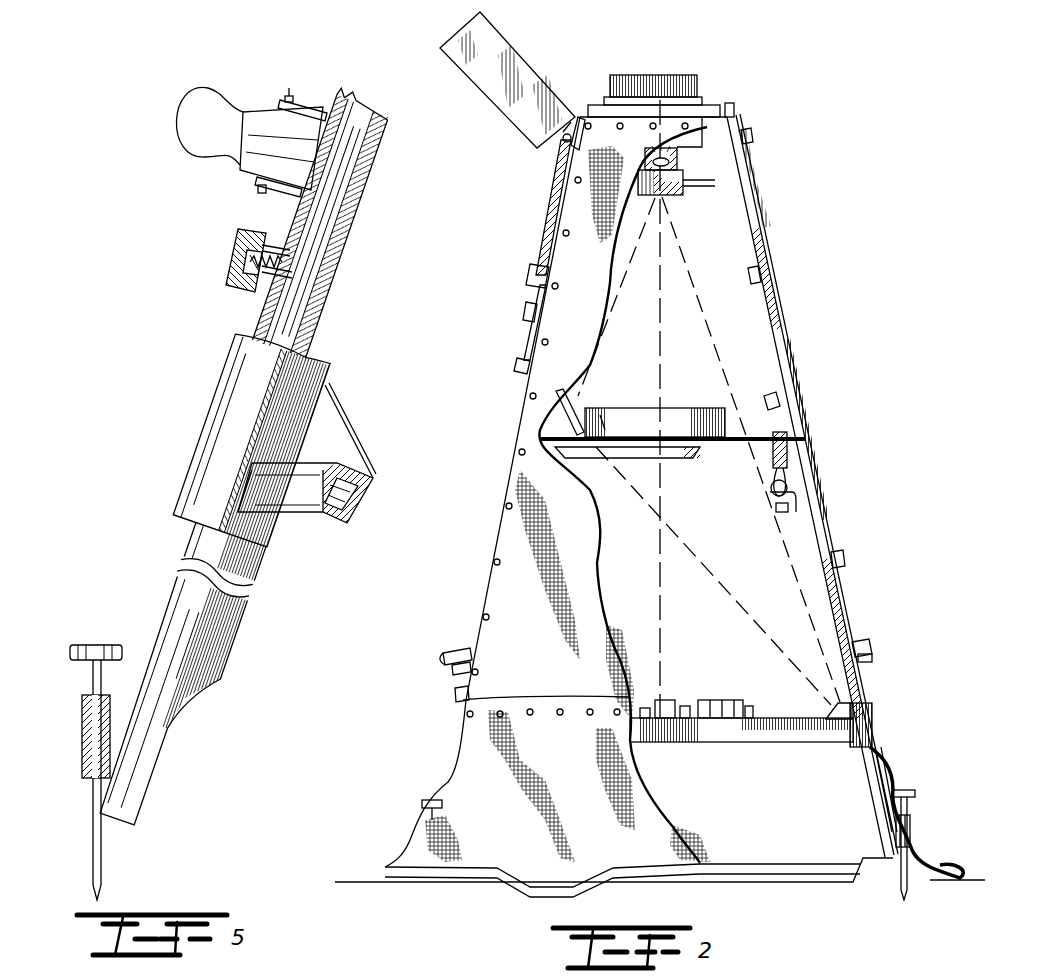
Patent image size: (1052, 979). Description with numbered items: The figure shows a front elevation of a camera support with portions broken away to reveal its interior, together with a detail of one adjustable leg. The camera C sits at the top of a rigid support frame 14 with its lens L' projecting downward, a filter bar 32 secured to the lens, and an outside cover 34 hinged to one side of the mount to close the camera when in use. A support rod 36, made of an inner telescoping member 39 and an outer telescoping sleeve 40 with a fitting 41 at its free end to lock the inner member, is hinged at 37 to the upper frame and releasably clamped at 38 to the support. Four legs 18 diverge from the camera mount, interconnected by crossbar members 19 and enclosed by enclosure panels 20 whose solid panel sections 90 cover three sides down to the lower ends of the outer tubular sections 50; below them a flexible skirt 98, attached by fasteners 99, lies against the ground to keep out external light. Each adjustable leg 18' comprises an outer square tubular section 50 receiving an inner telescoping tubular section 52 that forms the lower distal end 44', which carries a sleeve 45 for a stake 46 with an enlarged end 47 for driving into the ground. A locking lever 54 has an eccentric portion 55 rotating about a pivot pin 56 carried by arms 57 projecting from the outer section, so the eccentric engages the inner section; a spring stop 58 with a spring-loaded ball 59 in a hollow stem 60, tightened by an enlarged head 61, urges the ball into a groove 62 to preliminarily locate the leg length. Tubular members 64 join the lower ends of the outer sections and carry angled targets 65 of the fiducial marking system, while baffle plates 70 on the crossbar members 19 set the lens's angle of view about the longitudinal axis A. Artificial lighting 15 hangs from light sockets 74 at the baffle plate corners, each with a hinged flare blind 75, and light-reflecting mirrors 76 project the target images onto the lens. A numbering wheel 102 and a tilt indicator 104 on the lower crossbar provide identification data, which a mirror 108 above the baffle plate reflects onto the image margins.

In FIG. 2, the rigid support frame 14 is at (790, 310).
In FIG. 2, the artificial light source 15 is at (792, 478).
In FIG. 2, the legs 18 is at (861, 639).
In FIG. 5, the adjustable leg 18' is at (235, 439).
In FIG. 2, the crossbar members 19 is at (675, 458).
In FIG. 2, the enclosure panels 20 is at (538, 470).
In FIG. 2, the filter bar 32 is at (690, 188).
In FIG. 2, the outside cover 34 is at (510, 50).
In FIG. 2, the support rod 36 is at (552, 190).
In FIG. 2, the hinge 37 is at (562, 142).
In FIG. 2, the clamp 38 is at (523, 312).
In FIG. 2, the inner telescoping member 39 is at (522, 346).
In FIG. 2, the outer telescoping sleeve 40 is at (550, 230).
In FIG. 2, the fitting 41 is at (527, 274).
In FIG. 5, the lower distal end of adjustable leg 44' is at (155, 790).
In FIG. 2, the sleeve 45 is at (908, 820).
In FIG. 5, the sleeve 45 is at (82, 712).
In FIG. 2, the stake 46 is at (898, 878).
In FIG. 5, the stake 46 is at (102, 845).
In FIG. 2, the enlarged end 47 is at (418, 802).
In FIG. 5, the enlarged end 47 is at (90, 645).
In FIG. 2, the outer square tubular section 50 is at (765, 250).
In FIG. 5, the outer square tubular section 50 is at (380, 158).
In FIG. 2, the inner telescoping tubular section 52 is at (872, 790).
In FIG. 5, the inner telescoping tubular section 52 is at (240, 612).
In FIG. 2, the locking lever 54 is at (440, 658).
In FIG. 5, the locking lever 54 is at (180, 124).
In FIG. 5, the eccentric portion 55 is at (258, 110).
In FIG. 5, the pivot pin 56 is at (288, 88).
In FIG. 5, the arms 57 is at (318, 98).
In FIG. 2, the spring stop 58 is at (454, 692).
In FIG. 5, the spring stop 58 is at (230, 236).
In FIG. 5, the spring-loaded ball 59 is at (275, 252).
In FIG. 5, the hollow stem 60 is at (285, 256).
In FIG. 5, the enlarged head 61 is at (240, 262).
In FIG. 5, the groove 62 is at (282, 270).
In FIG. 5, the tubular members 64 is at (310, 525).
In FIG. 2, the targets 65 is at (840, 712).
In FIG. 5, the targets 65 is at (350, 420).
In FIG. 2, the baffle plates 70 is at (600, 412).
In FIG. 2, the light socket 74 is at (790, 445).
In FIG. 2, the flare blind 75 is at (798, 506).
In FIG. 2, the light-reflecting mirrors 76 is at (553, 398).
In FIG. 2, the solid panel sections 90 is at (510, 598).
In FIG. 2, the flexible skirt 98 is at (465, 738).
In FIG. 2, the fasteners 99 is at (596, 418).
In FIG. 2, the numbering wheel 102 is at (718, 700).
In FIG. 2, the tilt indicator 104 is at (676, 700).
In FIG. 2, the mirror 108 is at (678, 408).
In FIG. 2, the longitudinal axis A is at (663, 615).
In FIG. 2, the camera C is at (690, 78).
In FIG. 2, the lens L' is at (709, 144).